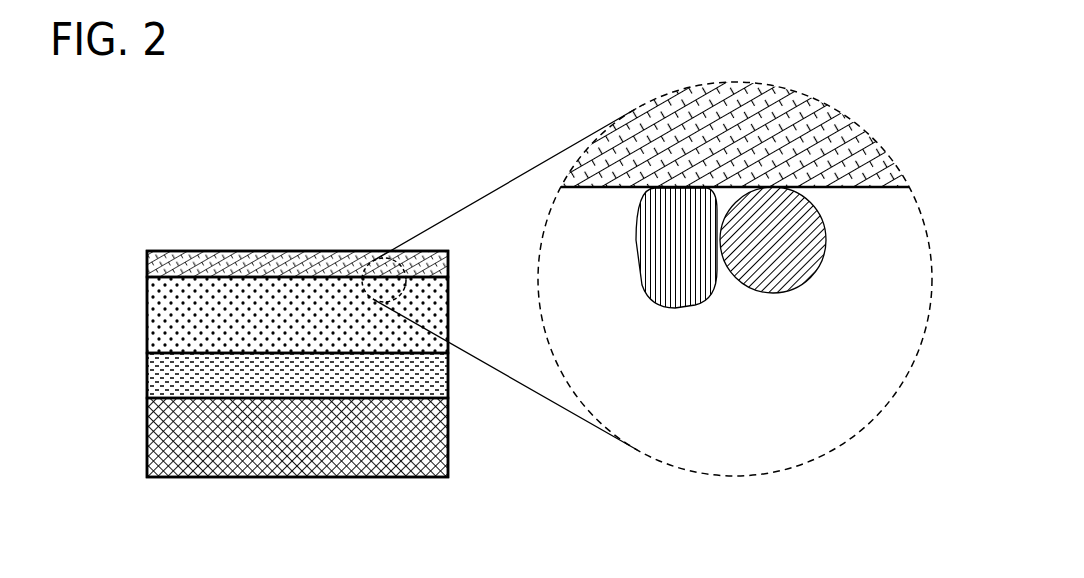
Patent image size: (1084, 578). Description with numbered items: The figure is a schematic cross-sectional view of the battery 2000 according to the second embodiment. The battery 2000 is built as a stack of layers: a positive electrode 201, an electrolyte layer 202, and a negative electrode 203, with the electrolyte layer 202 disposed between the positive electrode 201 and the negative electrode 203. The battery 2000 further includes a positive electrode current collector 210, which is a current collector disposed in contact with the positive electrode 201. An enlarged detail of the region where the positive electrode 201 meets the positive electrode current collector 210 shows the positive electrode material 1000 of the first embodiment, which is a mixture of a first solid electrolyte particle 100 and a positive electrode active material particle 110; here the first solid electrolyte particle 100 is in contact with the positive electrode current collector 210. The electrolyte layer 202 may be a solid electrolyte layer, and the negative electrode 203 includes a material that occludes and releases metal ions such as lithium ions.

The battery 2000 is at (329, 193).
The positive electrode current collector 210 is at (188, 258).
The positive electrode 201 is at (187, 298).
The electrolyte layer 202 is at (187, 372).
The negative electrode 203 is at (187, 437).
The positive electrode material 1000 is at (731, 287).
The first solid electrolyte particle 100 is at (810, 273).
The positive electrode active material particle 110 is at (660, 257).